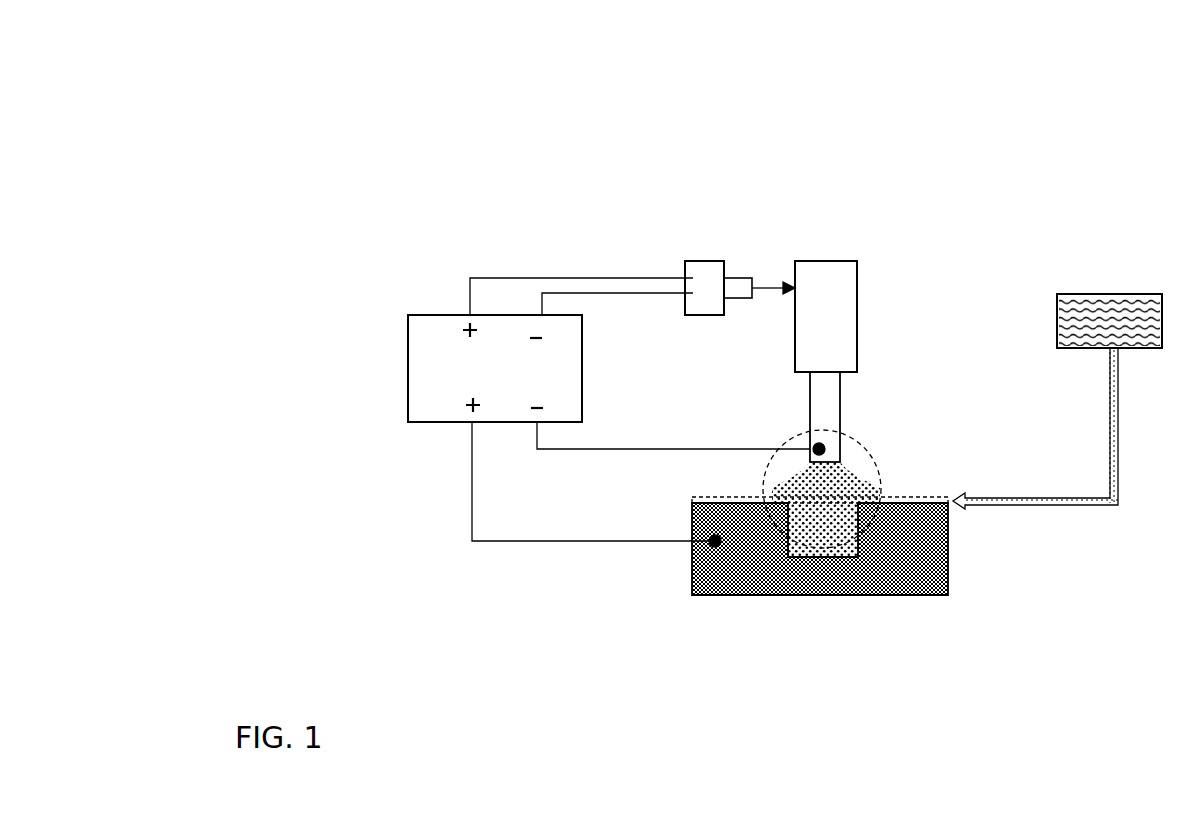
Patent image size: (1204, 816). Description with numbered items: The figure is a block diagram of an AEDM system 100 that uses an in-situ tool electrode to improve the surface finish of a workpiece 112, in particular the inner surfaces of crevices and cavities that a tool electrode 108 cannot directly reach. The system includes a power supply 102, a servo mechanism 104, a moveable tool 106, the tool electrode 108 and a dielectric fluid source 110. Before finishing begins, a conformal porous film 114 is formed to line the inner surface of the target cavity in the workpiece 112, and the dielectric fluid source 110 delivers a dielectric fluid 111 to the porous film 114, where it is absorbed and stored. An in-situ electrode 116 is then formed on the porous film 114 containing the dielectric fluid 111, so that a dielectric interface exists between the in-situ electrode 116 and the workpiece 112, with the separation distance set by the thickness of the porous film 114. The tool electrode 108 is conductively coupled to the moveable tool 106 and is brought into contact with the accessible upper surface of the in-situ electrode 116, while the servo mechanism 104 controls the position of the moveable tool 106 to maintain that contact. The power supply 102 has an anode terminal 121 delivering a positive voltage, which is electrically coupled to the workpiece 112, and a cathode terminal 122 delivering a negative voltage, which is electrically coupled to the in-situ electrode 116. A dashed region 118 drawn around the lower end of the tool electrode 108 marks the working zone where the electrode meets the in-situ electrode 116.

The AEDM system 100 is at (333, 140).
The power supply 102 is at (422, 317).
The servo mechanism 104 is at (703, 262).
The moveable tool 106 is at (840, 258).
The tool electrode 108 is at (810, 412).
The dielectric fluid source 110 is at (1133, 292).
The dielectric fluid 111 is at (1040, 498).
The workpiece 112 is at (940, 553).
The conformal porous film 114 is at (908, 497).
The in-situ electrode 116 is at (838, 480).
The plasma region 118 is at (783, 443).
The anode terminal 121 is at (575, 543).
The cathode terminal 122 is at (635, 450).